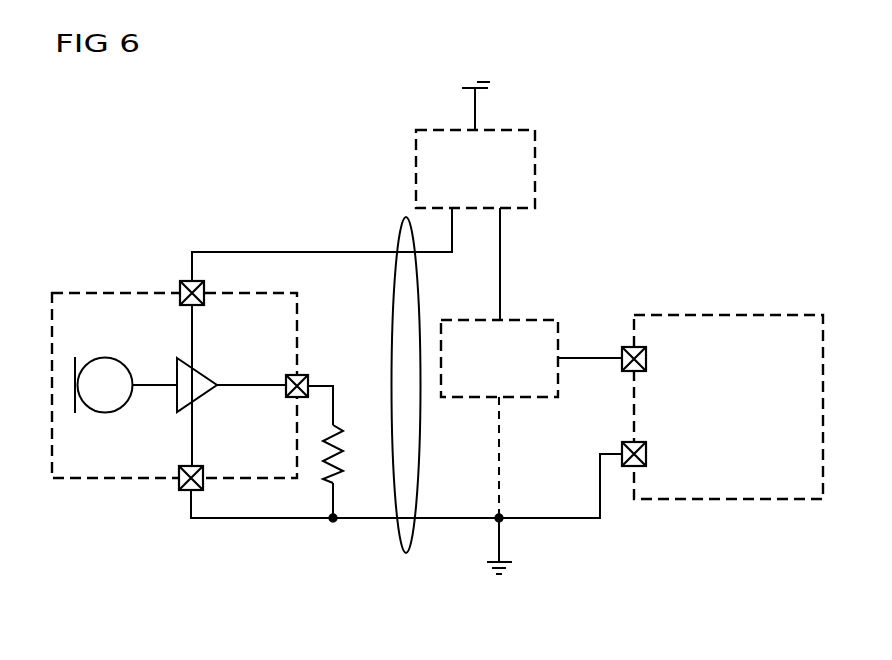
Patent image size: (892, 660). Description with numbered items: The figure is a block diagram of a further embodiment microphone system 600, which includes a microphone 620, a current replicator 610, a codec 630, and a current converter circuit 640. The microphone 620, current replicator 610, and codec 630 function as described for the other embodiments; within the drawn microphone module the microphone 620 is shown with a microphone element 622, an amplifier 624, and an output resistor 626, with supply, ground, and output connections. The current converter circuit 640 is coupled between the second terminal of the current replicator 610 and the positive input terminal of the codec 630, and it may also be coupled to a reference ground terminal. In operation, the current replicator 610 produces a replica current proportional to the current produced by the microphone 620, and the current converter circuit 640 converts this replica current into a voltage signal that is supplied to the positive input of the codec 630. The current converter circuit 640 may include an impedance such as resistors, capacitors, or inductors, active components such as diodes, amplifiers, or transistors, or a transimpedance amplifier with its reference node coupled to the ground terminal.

The microphone system 600 is at (712, 80).
The current replicator 610 is at (415, 168).
The microphone 620 is at (118, 293).
The microphone 622 is at (118, 358).
The amplifier 624 is at (177, 400).
The output resistor Ro 626 is at (333, 425).
The codec 630 is at (720, 315).
The current converter circuit 640 is at (527, 320).